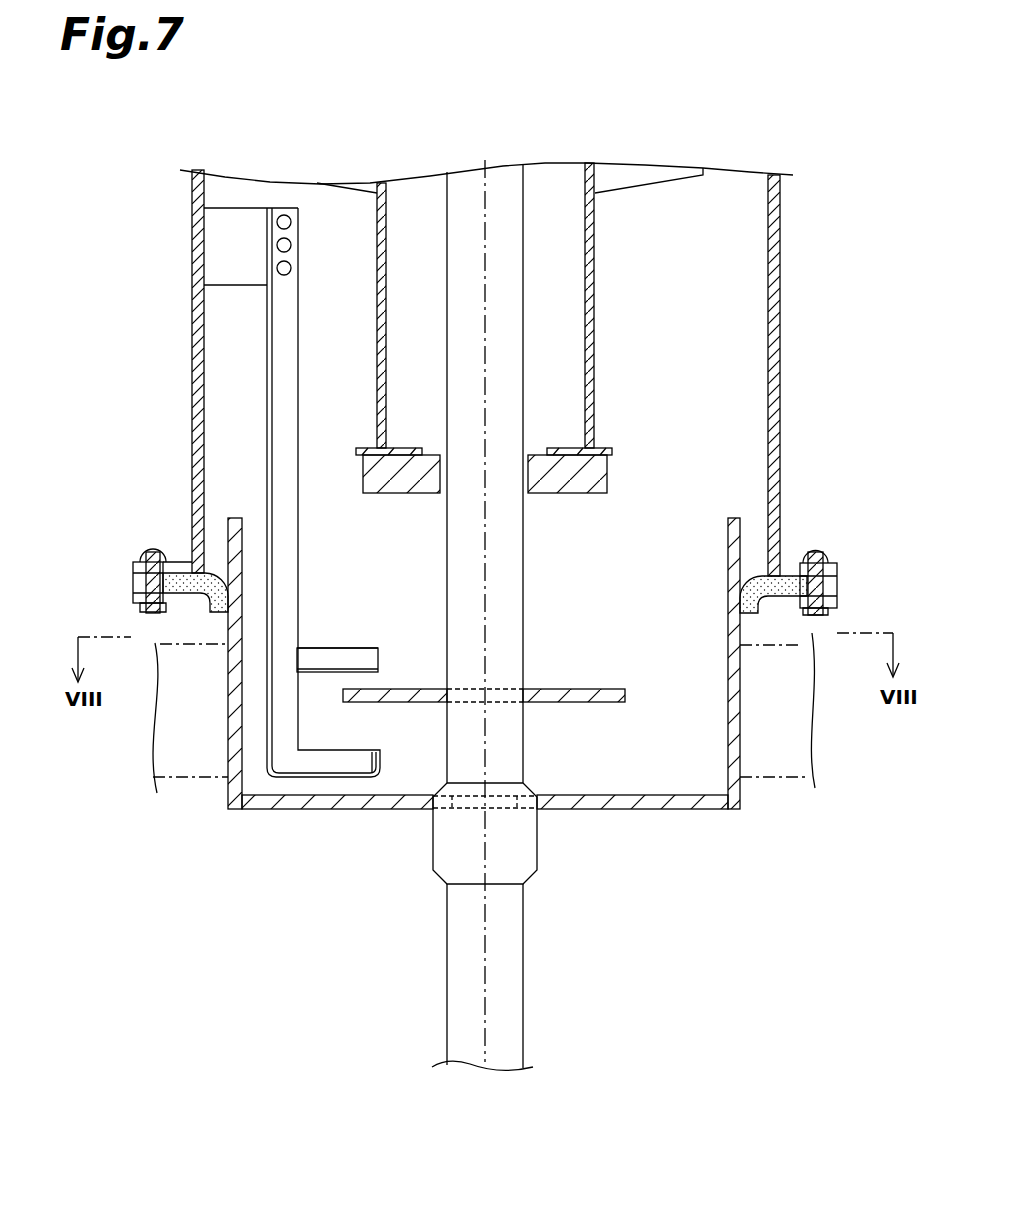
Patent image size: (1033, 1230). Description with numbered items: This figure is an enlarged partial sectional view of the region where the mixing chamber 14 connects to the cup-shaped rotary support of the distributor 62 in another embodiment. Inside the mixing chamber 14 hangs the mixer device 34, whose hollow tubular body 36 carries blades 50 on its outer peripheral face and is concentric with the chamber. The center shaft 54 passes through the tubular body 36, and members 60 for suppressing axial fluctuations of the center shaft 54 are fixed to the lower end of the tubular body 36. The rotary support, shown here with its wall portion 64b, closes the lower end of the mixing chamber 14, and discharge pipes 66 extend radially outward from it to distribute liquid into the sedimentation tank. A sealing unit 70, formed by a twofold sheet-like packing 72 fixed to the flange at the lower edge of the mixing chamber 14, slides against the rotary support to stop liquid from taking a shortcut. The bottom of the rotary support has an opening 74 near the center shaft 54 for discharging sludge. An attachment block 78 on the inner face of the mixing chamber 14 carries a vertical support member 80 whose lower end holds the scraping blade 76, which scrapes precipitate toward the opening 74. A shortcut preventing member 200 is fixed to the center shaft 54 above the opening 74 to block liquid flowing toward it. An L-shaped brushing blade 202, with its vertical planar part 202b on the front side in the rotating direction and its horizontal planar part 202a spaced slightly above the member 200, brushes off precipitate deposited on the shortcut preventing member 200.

The mixing chamber 14 is at (773, 355).
The blades 50 is at (678, 177).
The mixer device 34 is at (600, 246).
The hollow tubular body 36 is at (590, 328).
The members for suppressing axial fluctuations 60 is at (600, 470).
The attachment block 78 is at (237, 272).
The support member 80 is at (280, 447).
The scraping blade 76 is at (365, 760).
The center shaft 54 is at (510, 587).
The opening 74 is at (452, 815).
The shortcut preventing member 200 is at (596, 689).
The brushing blade 202 is at (367, 658).
The horizontal planar part 202a is at (318, 672).
The vertically disposed planar part 202b is at (329, 648).
The distributor 62 is at (658, 812).
The elbow pipe 64b is at (728, 578).
The discharge pipes 66 is at (193, 780).
The sealing unit 70 is at (792, 618).
The packing 72 is at (795, 578).